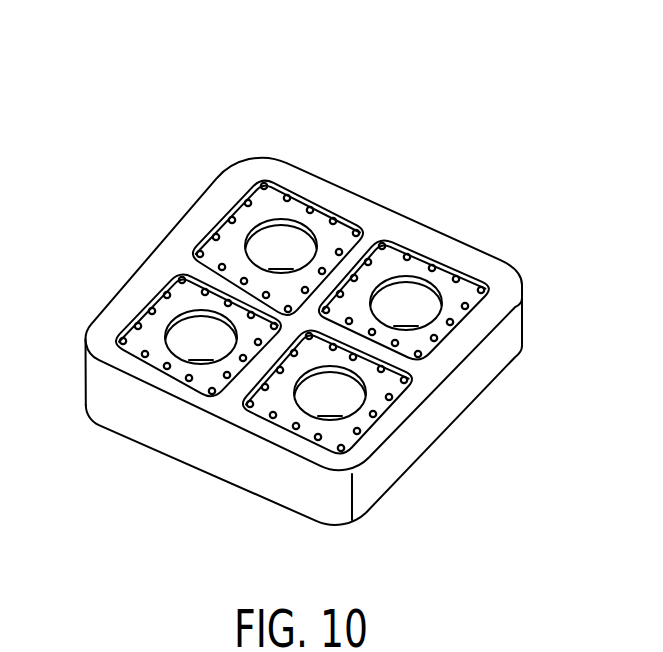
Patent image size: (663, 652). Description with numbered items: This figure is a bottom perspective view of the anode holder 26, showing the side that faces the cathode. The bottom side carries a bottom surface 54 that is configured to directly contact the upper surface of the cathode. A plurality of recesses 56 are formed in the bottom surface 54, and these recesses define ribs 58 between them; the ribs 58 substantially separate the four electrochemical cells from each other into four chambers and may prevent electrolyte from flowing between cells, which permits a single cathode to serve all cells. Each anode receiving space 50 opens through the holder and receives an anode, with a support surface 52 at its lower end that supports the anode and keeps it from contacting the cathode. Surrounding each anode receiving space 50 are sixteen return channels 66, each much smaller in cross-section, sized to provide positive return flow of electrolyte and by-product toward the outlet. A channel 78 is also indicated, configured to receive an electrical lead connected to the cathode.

The anode holder 26 is at (240, 103).
The anode receiving space 50 is at (270, 240).
The support surface 52 is at (468, 313).
The bottom surface 54 is at (416, 230).
The recesses 56 is at (319, 207).
The ribs 58 is at (414, 364).
The return channels 66 is at (147, 305).
The channel 78 is at (352, 360).